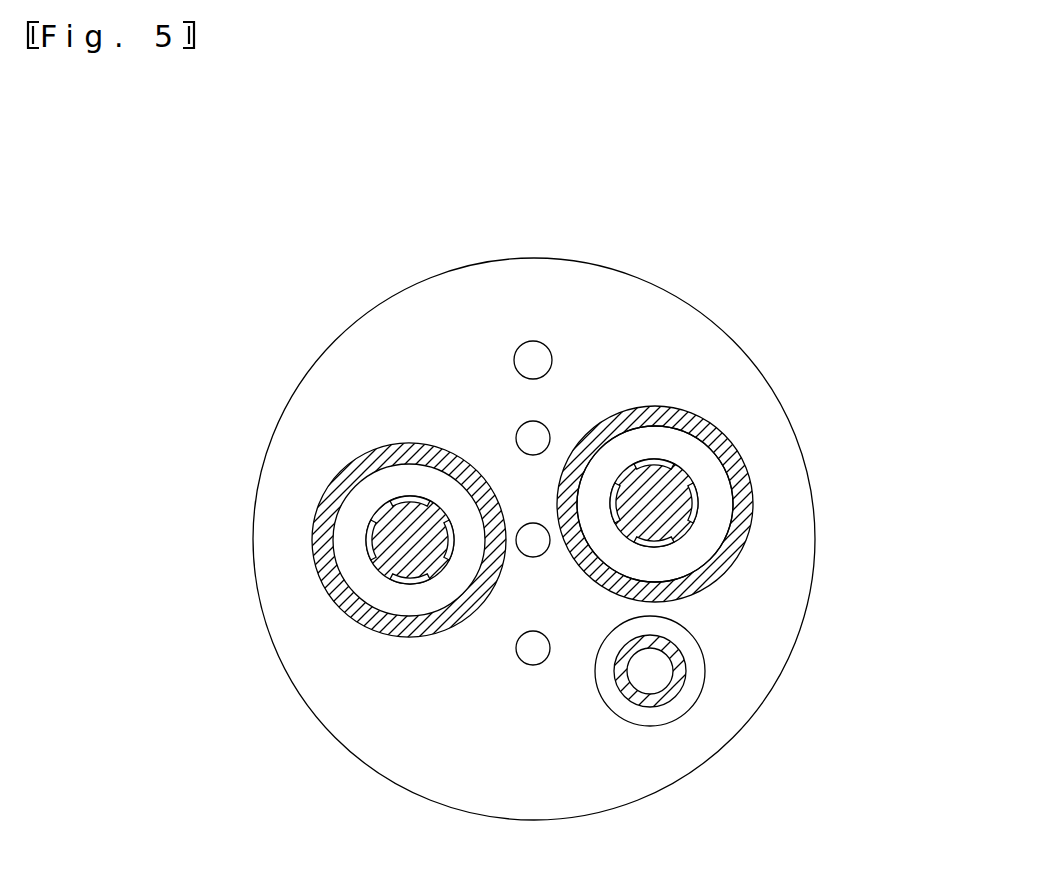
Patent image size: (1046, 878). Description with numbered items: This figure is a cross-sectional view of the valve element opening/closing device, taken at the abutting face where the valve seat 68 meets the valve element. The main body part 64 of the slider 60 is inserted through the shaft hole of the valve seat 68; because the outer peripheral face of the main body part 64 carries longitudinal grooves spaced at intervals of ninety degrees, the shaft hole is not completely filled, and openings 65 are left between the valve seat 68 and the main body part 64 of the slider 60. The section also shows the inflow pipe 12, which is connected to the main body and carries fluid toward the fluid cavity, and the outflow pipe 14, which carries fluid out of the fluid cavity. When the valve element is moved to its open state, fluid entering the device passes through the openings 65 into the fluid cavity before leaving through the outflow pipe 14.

The inflow pipe 12 is at (717, 578).
The outflow pipe 14 is at (677, 693).
The slider 60 is at (660, 487).
The main body part 64 is at (754, 460).
The openings 65 is at (697, 506).
The valve seat 68 is at (703, 550).